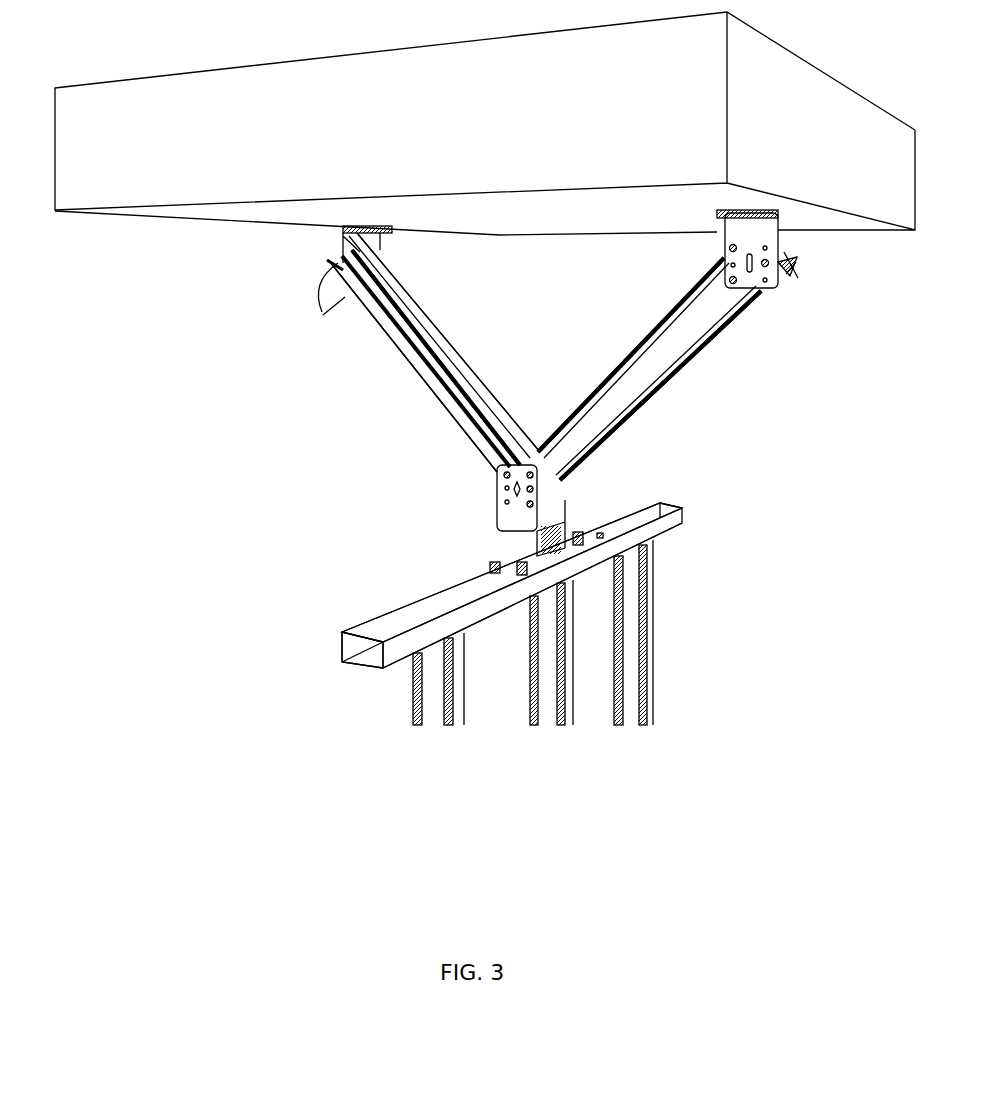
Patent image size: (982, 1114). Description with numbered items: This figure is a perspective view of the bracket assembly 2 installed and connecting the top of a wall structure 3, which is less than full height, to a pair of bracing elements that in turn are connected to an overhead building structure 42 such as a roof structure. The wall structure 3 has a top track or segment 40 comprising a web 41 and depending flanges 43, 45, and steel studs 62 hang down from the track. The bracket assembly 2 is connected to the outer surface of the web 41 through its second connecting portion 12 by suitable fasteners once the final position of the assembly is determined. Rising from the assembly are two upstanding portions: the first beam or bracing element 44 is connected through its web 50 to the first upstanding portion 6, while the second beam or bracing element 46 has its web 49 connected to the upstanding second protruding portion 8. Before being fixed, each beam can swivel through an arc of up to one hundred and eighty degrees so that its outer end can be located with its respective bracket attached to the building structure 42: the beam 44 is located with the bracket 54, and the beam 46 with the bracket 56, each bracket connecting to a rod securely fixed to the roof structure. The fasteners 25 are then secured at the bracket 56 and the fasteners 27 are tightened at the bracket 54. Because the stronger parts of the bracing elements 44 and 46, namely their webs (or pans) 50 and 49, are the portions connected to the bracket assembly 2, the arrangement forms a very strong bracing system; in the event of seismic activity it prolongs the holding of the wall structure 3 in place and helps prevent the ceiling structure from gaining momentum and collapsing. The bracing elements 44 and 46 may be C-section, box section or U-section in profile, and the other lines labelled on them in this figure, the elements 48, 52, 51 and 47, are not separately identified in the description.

The building structure 42 is at (162, 80).
The bracket 54 is at (340, 236).
The bracket 56 is at (780, 237).
The fasteners 25 is at (783, 265).
The fasteners 27 is at (323, 312).
The first beam or bracing element 44 is at (397, 360).
The first brace web 48 is at (455, 353).
The web 50 is at (462, 383).
The first brace flange lip 52 is at (460, 430).
The beam or bracing element 46 is at (670, 307).
The second brace web 51 is at (613, 372).
The web 49 is at (662, 358).
The second brace flange lip 47 is at (653, 405).
The bracket assembly 2 is at (470, 513).
The first upstanding portion 6 is at (567, 509).
The second protruding portion 8 is at (497, 534).
The second connecting portion 12 is at (490, 573).
The top track or segment 40 is at (682, 512).
The web 41 is at (393, 620).
The depending flange 43 is at (340, 649).
The depending flange 45 is at (392, 672).
The studs 62 is at (627, 727).
The wall structure 3 is at (677, 722).